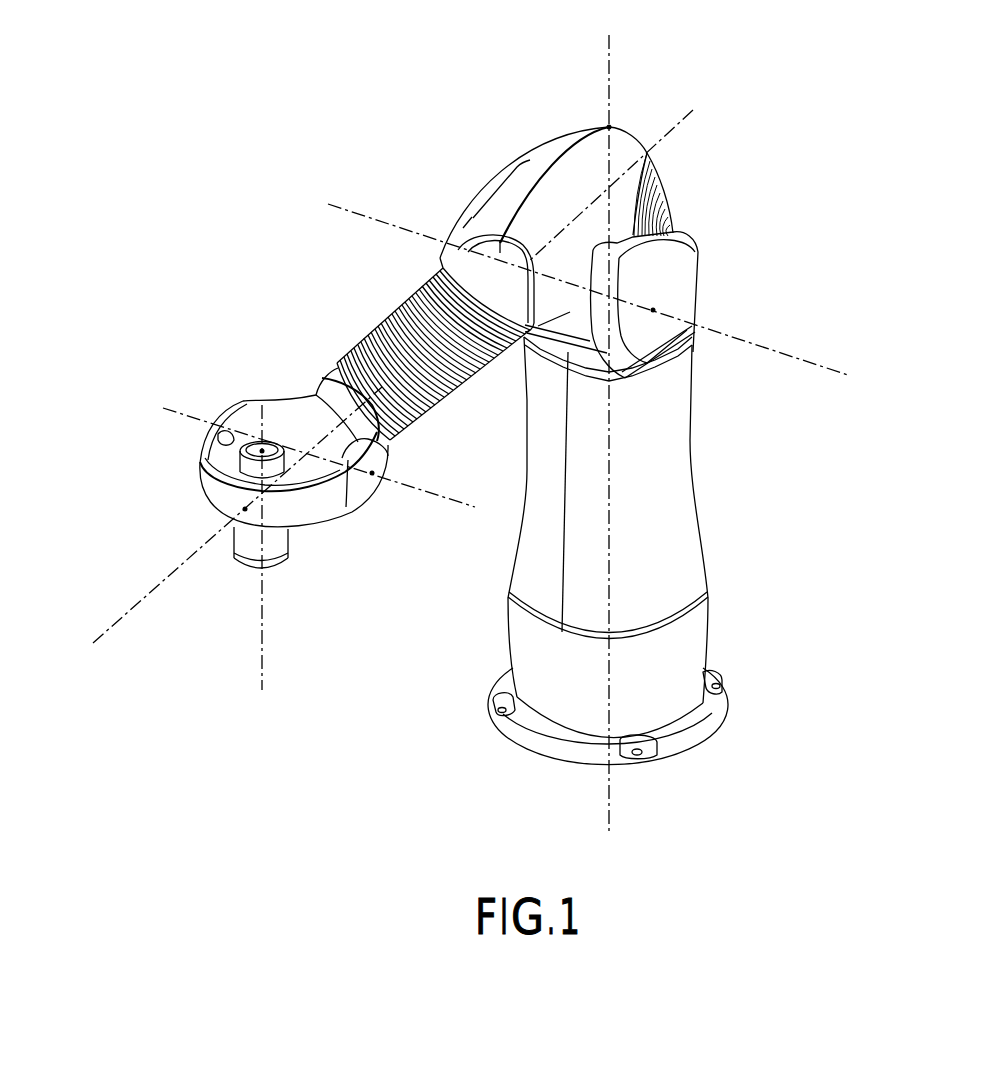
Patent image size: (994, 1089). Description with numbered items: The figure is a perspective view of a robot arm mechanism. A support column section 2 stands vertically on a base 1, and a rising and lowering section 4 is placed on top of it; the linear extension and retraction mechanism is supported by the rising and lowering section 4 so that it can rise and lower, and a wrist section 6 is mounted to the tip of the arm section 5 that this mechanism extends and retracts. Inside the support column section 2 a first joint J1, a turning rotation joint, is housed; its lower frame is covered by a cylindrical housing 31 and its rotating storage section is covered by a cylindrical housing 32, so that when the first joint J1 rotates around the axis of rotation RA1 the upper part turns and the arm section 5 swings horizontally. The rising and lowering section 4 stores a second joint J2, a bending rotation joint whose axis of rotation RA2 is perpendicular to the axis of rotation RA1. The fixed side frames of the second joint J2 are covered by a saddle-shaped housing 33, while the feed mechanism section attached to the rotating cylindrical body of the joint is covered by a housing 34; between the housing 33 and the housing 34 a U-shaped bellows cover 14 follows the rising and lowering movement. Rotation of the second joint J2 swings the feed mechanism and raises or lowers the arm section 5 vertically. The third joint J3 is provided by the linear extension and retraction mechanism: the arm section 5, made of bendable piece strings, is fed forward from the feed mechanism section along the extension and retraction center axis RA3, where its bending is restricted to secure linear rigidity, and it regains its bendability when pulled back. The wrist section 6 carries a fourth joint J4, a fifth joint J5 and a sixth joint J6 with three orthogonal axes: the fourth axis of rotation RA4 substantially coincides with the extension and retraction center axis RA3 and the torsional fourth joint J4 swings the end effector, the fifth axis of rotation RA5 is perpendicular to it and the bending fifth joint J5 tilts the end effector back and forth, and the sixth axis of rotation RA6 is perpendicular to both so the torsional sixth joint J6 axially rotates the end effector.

The base 1 is at (727, 707).
The support column section 2 is at (770, 506).
The rising and lowering section 4 is at (532, 127).
The arm section 5 is at (366, 282).
The wrist section 6 is at (236, 377).
The U-shaped bellows cover 14 is at (667, 185).
The cylindrical housing 31 is at (710, 641).
The cylindrical housing 32 is at (691, 437).
The saddle-shaped housing 33 is at (700, 290).
The housing 34 is at (513, 203).
The first joint J1 is at (716, 589).
The second joint J2 is at (580, 352).
The third joint J3 is at (436, 267).
The fourth joint J4 is at (324, 363).
The fifth joint J5 is at (371, 520).
The sixth joint J6 is at (238, 568).
The axis of rotation RA1 is at (614, 418).
The axis of rotation RA2 is at (612, 305).
The extension and retraction center axis RA3 is at (626, 165).
The fourth axis of rotation RA4 is at (218, 535).
The fifth axis of rotation RA5 is at (292, 439).
The sixth axis of rotation RA6 is at (263, 549).